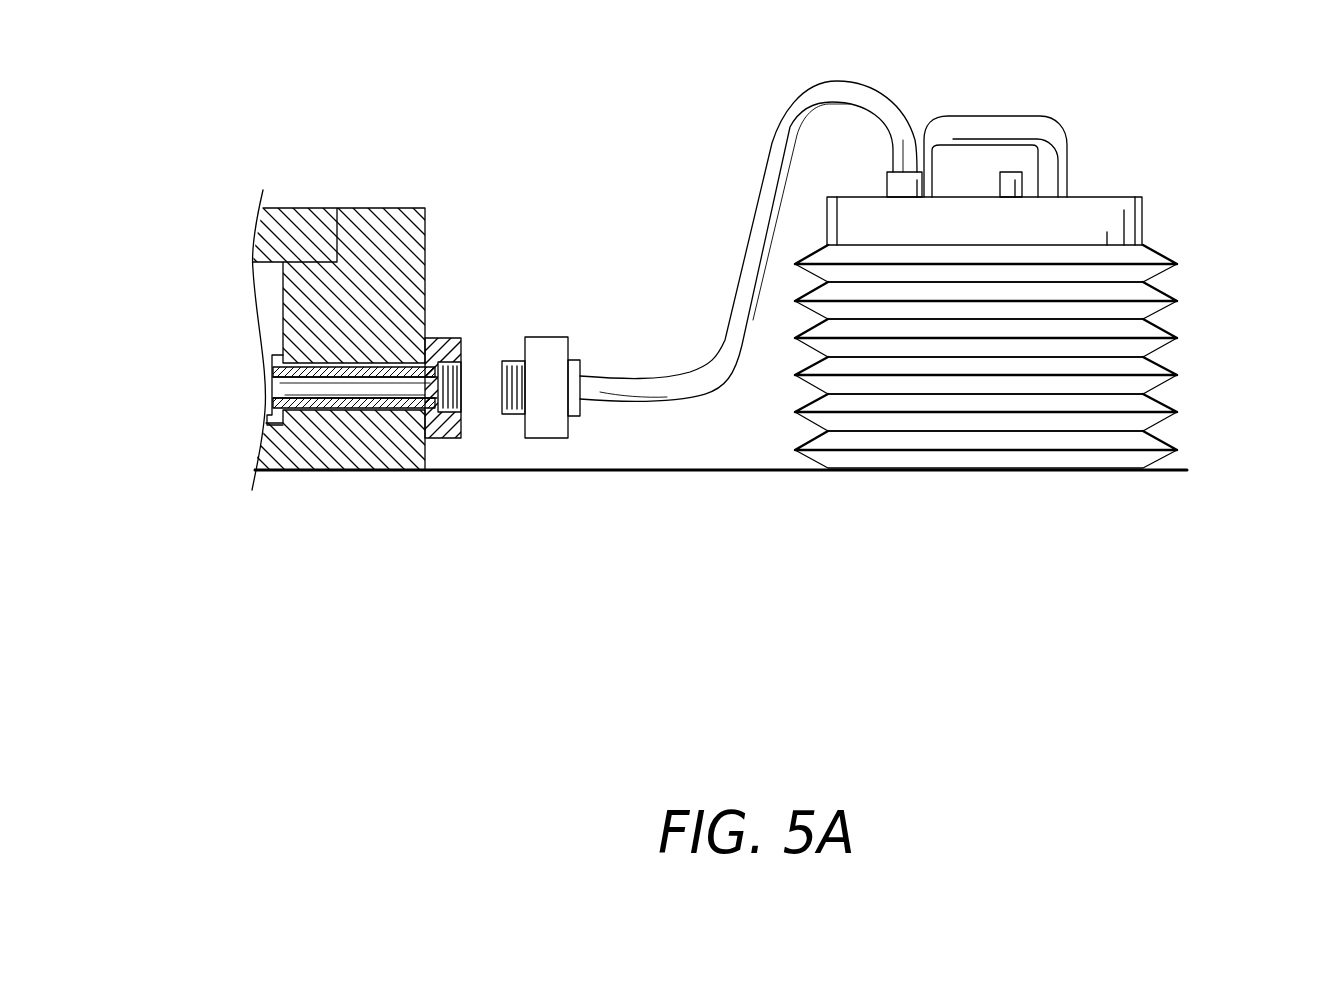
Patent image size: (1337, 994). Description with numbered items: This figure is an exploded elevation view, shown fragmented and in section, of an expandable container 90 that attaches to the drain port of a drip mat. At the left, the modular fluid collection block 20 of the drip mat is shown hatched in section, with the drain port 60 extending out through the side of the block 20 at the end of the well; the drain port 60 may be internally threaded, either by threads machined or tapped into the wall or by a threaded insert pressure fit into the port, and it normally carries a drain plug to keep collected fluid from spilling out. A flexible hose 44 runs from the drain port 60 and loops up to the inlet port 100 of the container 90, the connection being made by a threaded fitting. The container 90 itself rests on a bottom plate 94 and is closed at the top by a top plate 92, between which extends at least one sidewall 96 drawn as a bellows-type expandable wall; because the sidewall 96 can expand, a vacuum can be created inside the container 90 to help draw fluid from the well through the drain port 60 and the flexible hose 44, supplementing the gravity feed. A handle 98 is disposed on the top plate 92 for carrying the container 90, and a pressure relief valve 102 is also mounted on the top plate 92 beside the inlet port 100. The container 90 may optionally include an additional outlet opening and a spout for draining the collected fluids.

The modular fluid collection block 20 is at (372, 208).
The flexible hose 44 is at (760, 195).
The drain port 60 is at (448, 338).
The container 90 is at (765, 337).
The top plate 92 is at (1130, 197).
The bottom plate 94 is at (1017, 472).
The sidewall 96 is at (1153, 262).
The handle 98 is at (1010, 116).
The inlet port 100 is at (905, 172).
The pressure relief valve 102 is at (1027, 184).